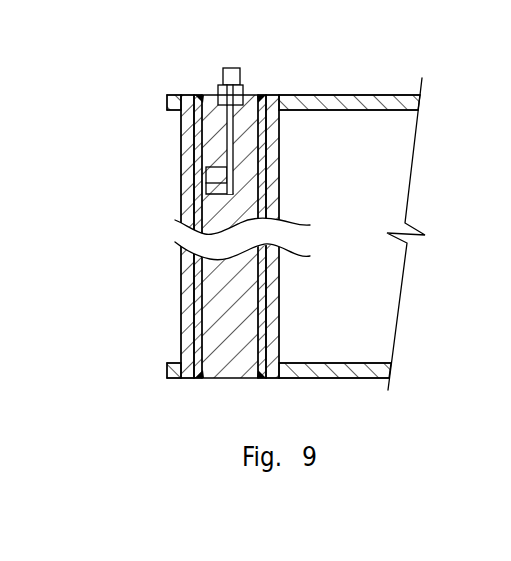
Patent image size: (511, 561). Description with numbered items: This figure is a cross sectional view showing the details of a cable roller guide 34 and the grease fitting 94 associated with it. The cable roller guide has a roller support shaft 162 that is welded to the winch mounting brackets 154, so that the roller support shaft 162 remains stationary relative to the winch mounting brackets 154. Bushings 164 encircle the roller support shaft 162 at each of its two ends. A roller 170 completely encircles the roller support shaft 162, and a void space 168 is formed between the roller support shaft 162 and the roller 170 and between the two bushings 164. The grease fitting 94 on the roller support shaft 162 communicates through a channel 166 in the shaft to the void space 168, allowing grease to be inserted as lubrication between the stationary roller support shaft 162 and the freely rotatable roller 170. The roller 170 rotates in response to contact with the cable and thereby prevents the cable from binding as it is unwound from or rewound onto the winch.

The cable roller guide 34 is at (398, 156).
The grease fitting 94 is at (224, 68).
The winch mounting bracket 154 is at (299, 93).
The roller support shaft 162 is at (262, 278).
The bushing 164 is at (203, 150).
The channel 166 is at (234, 180).
The void space 168 is at (206, 210).
The roller 170 is at (190, 280).